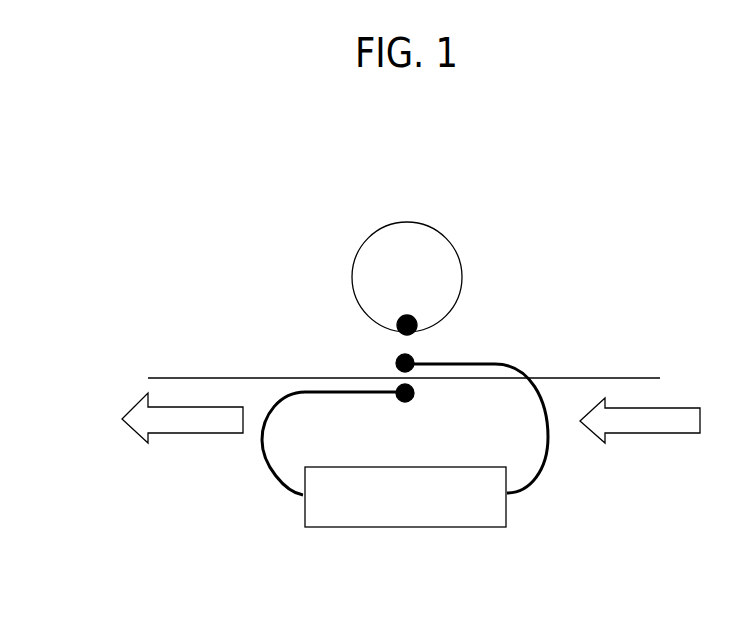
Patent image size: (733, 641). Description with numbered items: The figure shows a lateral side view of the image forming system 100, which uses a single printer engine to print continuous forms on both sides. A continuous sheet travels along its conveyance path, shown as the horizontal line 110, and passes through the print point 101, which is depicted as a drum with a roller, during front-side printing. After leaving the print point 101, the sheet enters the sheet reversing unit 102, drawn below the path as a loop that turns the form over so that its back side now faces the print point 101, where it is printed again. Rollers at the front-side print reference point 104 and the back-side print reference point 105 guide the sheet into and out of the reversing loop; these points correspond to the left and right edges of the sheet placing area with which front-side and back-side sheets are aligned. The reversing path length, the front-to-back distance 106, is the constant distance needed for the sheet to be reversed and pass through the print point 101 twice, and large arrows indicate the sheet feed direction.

The image forming system 100 is at (595, 223).
The print point 101 is at (415, 318).
The sheet reversing unit 102 is at (403, 527).
The front-side print reference point 104 is at (414, 396).
The back-side print reference point 105 is at (403, 353).
The front-to-back distance 106 is at (537, 478).
The sheet conveyance path 110 is at (590, 378).